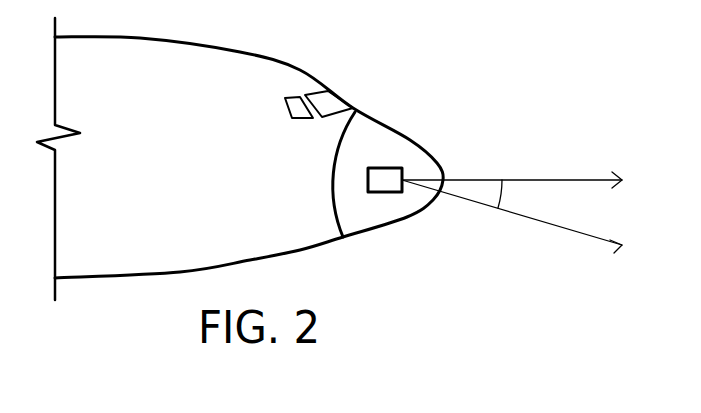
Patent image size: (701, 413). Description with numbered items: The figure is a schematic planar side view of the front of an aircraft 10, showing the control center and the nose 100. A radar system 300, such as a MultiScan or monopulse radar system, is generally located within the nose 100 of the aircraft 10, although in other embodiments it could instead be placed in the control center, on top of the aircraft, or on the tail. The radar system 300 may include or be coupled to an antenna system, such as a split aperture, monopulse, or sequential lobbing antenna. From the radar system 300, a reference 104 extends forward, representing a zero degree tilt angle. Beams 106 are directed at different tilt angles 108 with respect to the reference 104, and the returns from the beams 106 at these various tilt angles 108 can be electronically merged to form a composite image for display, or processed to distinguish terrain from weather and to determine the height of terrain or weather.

The aircraft 10 is at (110, 53).
The nose 100 is at (363, 130).
The radar system 300 is at (380, 182).
The reference 104 is at (592, 180).
The beams 106 is at (555, 227).
The tilt angles 108 is at (500, 182).